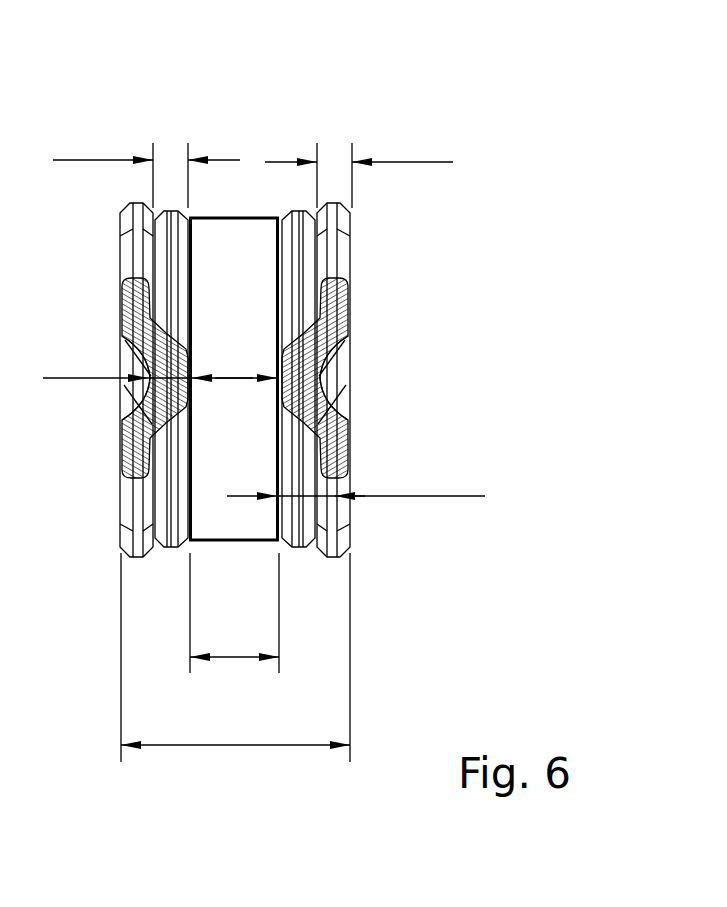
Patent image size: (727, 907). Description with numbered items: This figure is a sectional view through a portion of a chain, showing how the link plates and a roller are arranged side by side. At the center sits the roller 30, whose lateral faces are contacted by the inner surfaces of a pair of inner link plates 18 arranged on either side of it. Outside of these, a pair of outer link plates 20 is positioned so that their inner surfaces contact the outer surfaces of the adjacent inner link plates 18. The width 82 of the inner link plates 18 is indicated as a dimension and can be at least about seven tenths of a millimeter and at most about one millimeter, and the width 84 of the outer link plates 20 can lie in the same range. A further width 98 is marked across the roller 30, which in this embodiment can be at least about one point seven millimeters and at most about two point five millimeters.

The inner link plate 18 is at (168, 210).
The outer link plate 20 is at (137, 205).
The roller 30 is at (235, 216).
The width of inner link plate 82 is at (78, 162).
The width of outer link plate 84 is at (420, 164).
The width 98 is at (238, 658).